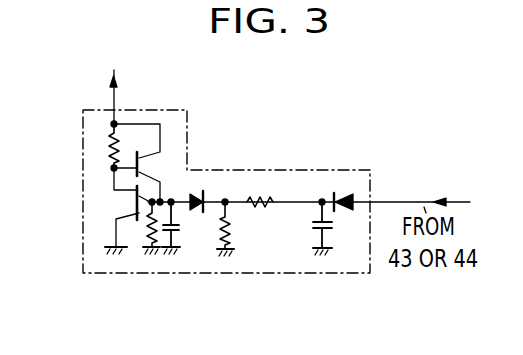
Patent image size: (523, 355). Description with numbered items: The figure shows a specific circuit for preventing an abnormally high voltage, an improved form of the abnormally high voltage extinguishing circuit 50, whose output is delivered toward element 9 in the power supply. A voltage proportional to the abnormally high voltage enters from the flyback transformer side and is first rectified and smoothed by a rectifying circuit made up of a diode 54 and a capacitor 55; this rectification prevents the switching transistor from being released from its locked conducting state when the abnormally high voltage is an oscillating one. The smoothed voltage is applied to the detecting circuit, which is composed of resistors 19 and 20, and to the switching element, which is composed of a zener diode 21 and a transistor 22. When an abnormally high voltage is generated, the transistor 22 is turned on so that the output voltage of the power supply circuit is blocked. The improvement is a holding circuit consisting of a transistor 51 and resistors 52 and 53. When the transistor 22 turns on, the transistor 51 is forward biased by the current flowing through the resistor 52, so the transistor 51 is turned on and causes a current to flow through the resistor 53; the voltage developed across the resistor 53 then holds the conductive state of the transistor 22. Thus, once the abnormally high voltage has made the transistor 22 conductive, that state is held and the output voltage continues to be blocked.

The output to element 9 is at (194, 90).
The resistor 19 is at (263, 194).
The resistor 20 is at (236, 226).
The zener diode 21 is at (204, 213).
The transistor 22 is at (128, 214).
The abnormally high voltage extinguishing circuit 50 is at (83, 258).
The transistor 51 is at (148, 163).
The resistor 52 is at (107, 148).
The resistor 53 is at (155, 216).
The diode 54 is at (352, 192).
The capacitor 55 is at (333, 224).